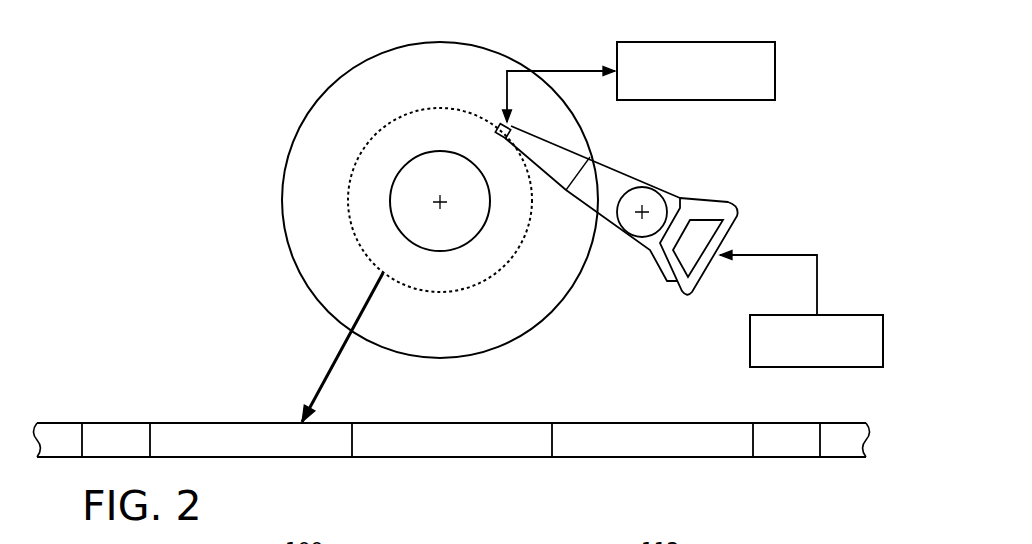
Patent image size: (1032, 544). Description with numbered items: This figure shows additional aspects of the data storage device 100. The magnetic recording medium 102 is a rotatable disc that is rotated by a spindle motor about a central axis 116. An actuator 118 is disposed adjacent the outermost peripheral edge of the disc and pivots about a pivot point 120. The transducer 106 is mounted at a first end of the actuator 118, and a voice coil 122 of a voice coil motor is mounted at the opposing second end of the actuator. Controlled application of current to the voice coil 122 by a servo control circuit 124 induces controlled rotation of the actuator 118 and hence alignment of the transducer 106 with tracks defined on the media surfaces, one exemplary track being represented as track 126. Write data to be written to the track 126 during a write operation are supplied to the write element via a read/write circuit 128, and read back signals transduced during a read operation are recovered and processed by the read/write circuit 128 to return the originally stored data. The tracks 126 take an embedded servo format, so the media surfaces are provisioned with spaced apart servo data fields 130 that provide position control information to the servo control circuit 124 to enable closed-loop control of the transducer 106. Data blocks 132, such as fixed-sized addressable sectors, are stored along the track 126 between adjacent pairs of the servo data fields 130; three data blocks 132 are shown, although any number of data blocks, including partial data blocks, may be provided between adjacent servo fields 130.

The data storage device 100 is at (172, 62).
The rotatable data recording medium 102 is at (296, 207).
The data transducer 106 is at (492, 112).
The central axis 116 is at (449, 178).
The actuator 118 is at (623, 162).
The pivot point 120 is at (640, 216).
The voice coil 122 is at (733, 222).
The servo control circuit 124 is at (863, 313).
The track 126 is at (347, 175).
The read/write circuit 128 is at (777, 70).
The servo data field 130 is at (117, 422).
The data block 132 is at (215, 422).